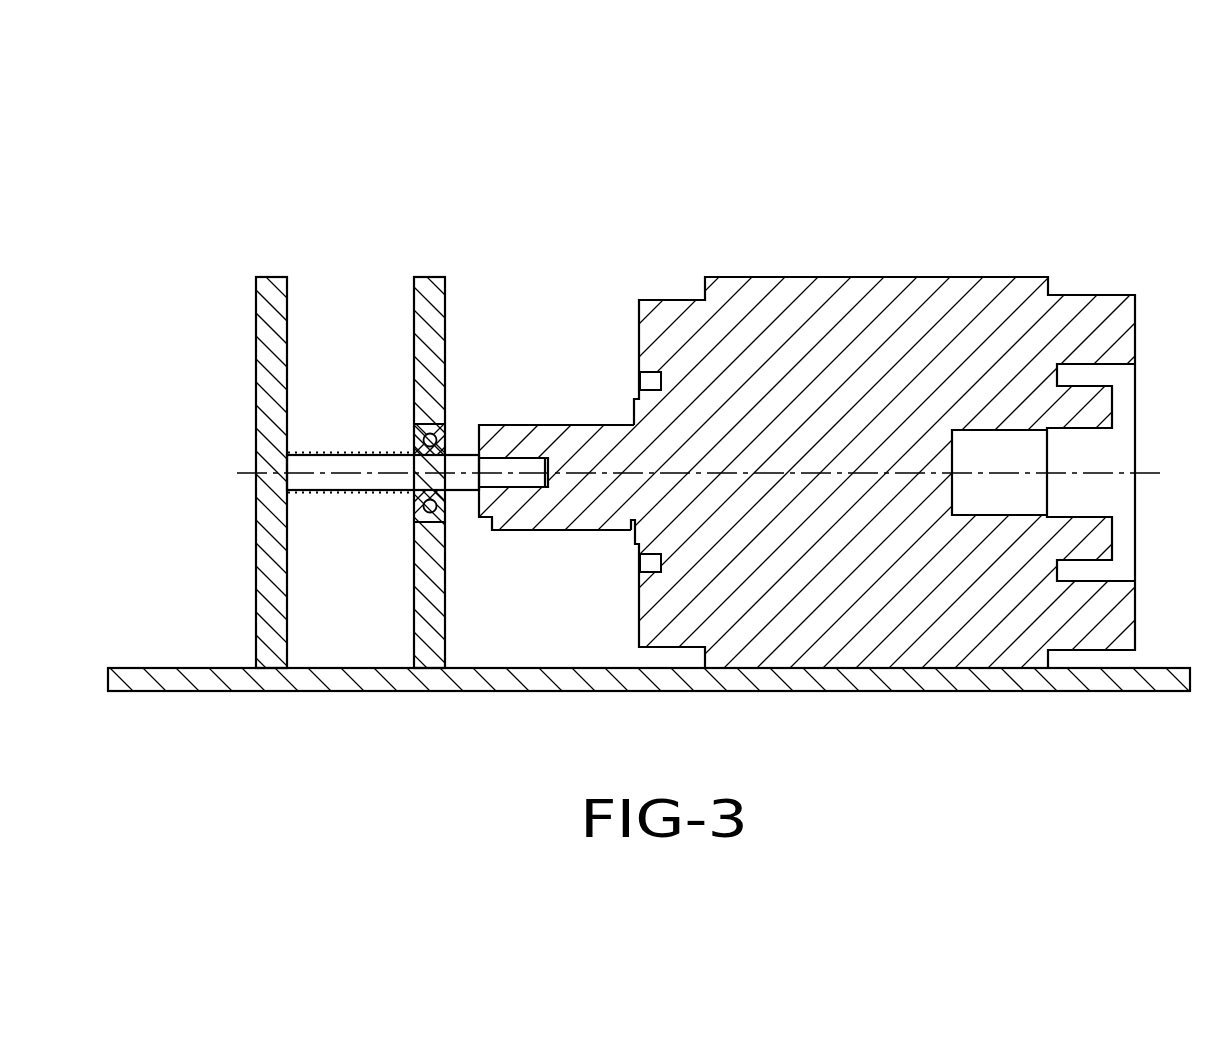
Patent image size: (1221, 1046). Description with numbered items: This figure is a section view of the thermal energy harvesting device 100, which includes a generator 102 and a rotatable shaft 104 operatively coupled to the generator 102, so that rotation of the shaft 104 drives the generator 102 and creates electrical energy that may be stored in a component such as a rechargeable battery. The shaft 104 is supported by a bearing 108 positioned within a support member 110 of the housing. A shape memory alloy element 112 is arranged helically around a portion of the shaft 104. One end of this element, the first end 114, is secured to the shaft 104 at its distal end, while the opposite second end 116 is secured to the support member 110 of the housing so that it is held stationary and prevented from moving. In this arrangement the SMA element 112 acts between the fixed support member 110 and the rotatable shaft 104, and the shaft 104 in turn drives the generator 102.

The thermal energy harvesting device 100 is at (598, 175).
The generator 102 is at (863, 283).
The rotatable shaft 104 is at (458, 455).
The bearing 108 is at (443, 508).
The support member 110 is at (446, 330).
The shape memory alloy element 112 is at (350, 491).
The first end of the SMA element 114 is at (290, 453).
The second end of the SMA element 116 is at (413, 492).